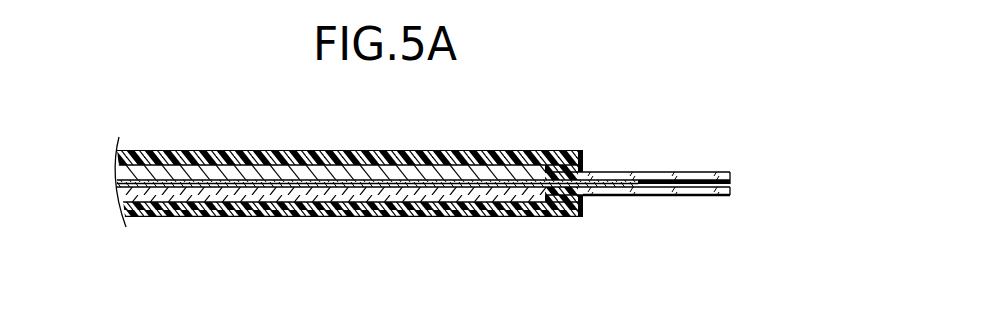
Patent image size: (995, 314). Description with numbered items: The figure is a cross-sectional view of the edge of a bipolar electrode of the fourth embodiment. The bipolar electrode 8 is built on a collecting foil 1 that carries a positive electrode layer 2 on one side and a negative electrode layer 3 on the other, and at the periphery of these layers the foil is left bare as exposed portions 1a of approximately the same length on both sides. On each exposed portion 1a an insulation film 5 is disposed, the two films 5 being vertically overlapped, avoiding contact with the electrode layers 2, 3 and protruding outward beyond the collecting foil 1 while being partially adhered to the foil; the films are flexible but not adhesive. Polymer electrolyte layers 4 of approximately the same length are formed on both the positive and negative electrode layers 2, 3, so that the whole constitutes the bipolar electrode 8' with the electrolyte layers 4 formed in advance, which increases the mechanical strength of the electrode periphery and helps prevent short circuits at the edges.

The bipolar electrode with polymer electrolyte layers 8' is at (350, 144).
The bipolar electrode 8 is at (97, 182).
The positive electrode layer 2 is at (207, 176).
The polymer electrolyte layer 4 is at (320, 177).
The collecting foil 1 is at (455, 186).
The negative electrode layer 3 is at (288, 218).
The exposed portion 1a is at (638, 145).
The insulation film 5 is at (681, 172).